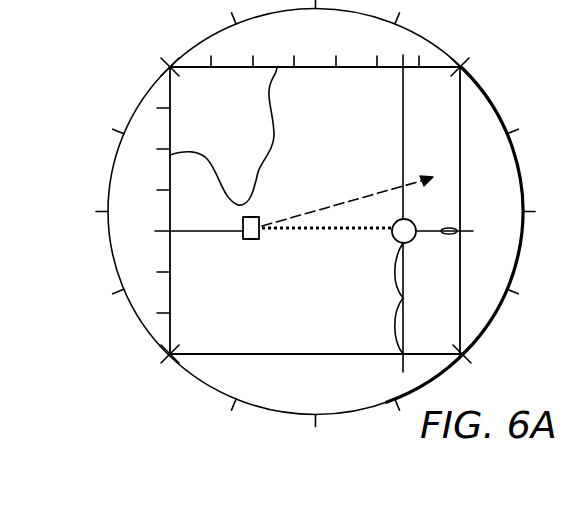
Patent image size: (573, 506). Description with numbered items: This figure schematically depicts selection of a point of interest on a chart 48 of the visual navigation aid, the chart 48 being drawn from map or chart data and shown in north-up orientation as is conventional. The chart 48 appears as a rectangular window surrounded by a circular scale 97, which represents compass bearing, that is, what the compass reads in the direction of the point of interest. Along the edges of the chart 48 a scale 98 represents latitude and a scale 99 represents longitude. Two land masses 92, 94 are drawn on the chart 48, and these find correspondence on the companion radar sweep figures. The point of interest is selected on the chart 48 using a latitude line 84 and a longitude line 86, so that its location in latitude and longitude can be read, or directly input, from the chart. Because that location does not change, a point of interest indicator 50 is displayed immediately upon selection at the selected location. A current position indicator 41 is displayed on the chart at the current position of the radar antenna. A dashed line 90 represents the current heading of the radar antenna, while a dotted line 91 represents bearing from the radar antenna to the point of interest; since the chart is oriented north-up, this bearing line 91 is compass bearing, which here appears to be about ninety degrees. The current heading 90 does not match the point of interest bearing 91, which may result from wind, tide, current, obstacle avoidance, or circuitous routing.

The current position indicator 41 is at (247, 240).
The chart 48 is at (231, 358).
The point of interest indicator 50 is at (396, 242).
The latitude line 84 is at (192, 231).
The longitude line 86 is at (402, 106).
The dashed line 90 is at (374, 170).
The dotted line 91 is at (338, 240).
The land mass 92 is at (215, 122).
The land mass 94 is at (447, 309).
The scale 97 is at (152, 85).
The scale 98 is at (170, 207).
The scale 99 is at (265, 67).